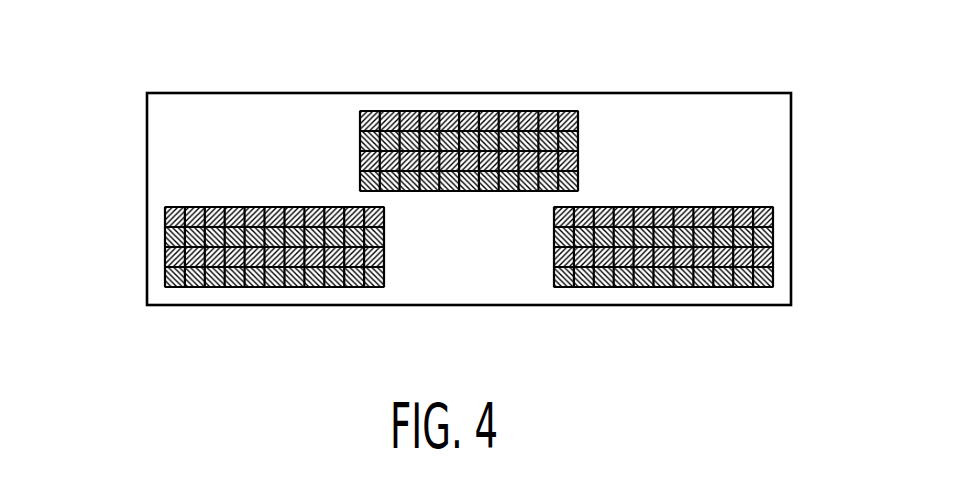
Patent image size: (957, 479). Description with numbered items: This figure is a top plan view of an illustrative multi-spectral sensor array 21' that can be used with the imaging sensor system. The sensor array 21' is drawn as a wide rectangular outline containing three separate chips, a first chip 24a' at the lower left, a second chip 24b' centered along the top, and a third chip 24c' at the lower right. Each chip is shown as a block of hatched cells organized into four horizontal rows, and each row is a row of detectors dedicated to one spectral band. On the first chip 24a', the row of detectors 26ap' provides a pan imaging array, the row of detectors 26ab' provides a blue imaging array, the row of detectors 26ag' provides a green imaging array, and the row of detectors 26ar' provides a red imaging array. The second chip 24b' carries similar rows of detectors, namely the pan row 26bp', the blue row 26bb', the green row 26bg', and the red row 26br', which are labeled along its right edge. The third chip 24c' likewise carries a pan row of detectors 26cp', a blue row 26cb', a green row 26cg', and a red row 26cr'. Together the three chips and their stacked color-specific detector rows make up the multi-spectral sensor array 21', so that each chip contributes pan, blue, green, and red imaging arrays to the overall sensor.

The multi-spectral sensor array 21' is at (469, 164).
The chip 24a' is at (274, 299).
The chip 24b' is at (469, 109).
The chip 24c' is at (663, 296).
The row of detectors 26ar' is at (220, 189).
The row of detectors 26ag' is at (209, 231).
The row of detectors 26ab' is at (202, 268).
The row of detectors 26ap' is at (212, 301).
The row of detectors 26br' is at (486, 82).
The row of detectors 26bg' is at (520, 95).
The row of detectors 26bb' is at (526, 149).
The row of detectors 26bp' is at (531, 184).
The row of detectors 26cr' is at (718, 187).
The row of detectors 26cg' is at (722, 222).
The row of detectors 26cb' is at (722, 267).
The row of detectors 26cp' is at (722, 305).